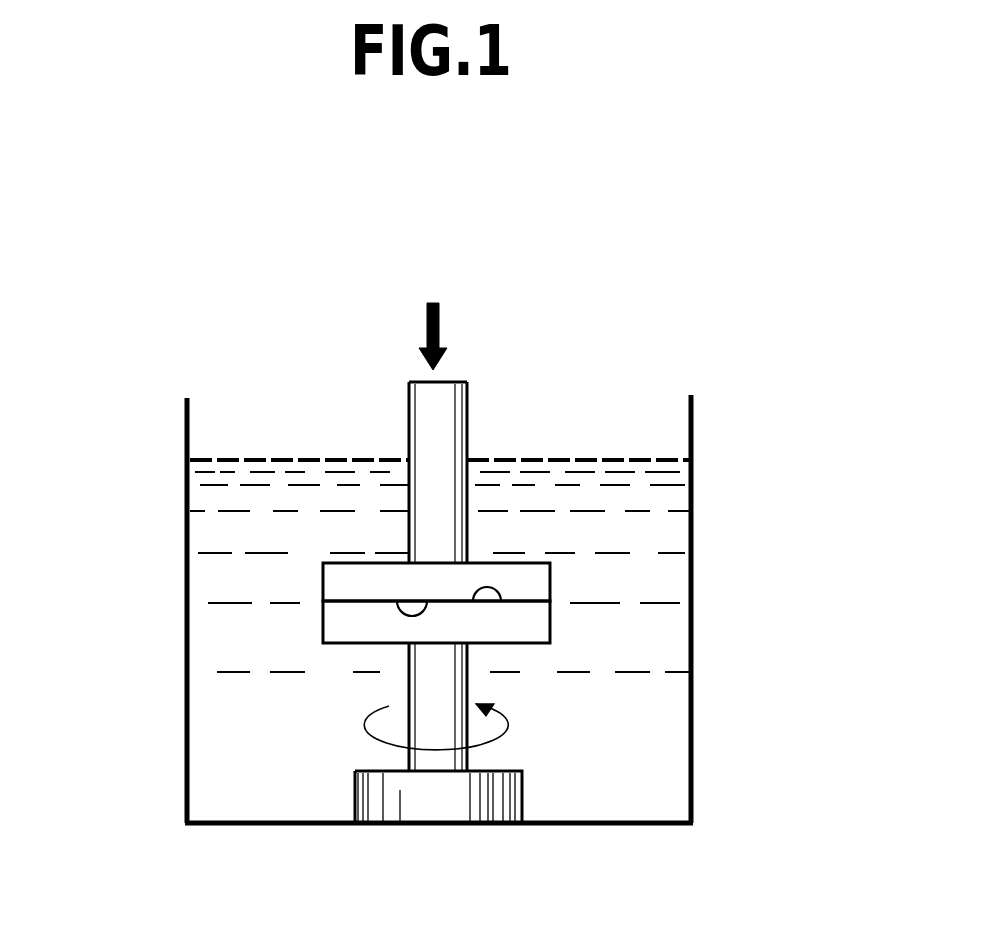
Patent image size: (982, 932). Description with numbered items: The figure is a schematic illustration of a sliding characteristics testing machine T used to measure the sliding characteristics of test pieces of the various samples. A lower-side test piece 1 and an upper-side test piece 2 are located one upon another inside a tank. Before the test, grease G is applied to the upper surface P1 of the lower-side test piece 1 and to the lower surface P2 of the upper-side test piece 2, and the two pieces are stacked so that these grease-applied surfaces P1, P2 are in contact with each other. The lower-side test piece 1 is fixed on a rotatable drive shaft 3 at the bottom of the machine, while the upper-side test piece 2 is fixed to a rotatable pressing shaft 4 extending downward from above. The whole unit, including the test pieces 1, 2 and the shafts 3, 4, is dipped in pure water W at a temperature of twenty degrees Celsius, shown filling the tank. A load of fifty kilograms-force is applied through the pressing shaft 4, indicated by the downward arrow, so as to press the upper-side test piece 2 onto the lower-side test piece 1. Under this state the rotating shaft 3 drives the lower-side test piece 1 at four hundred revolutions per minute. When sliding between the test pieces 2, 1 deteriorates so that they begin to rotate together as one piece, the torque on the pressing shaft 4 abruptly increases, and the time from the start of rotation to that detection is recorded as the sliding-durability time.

The sliding characteristics testing machine T is at (632, 282).
The pure water W is at (258, 460).
The pressing shaft 4 is at (448, 425).
The upper-side test piece 2 is at (343, 585).
The lower-side test piece 1 is at (342, 628).
The lower surface P2 is at (400, 605).
The grease G is at (530, 600).
The upper surface P1 is at (500, 603).
The rotatable drive shaft 3 is at (437, 762).